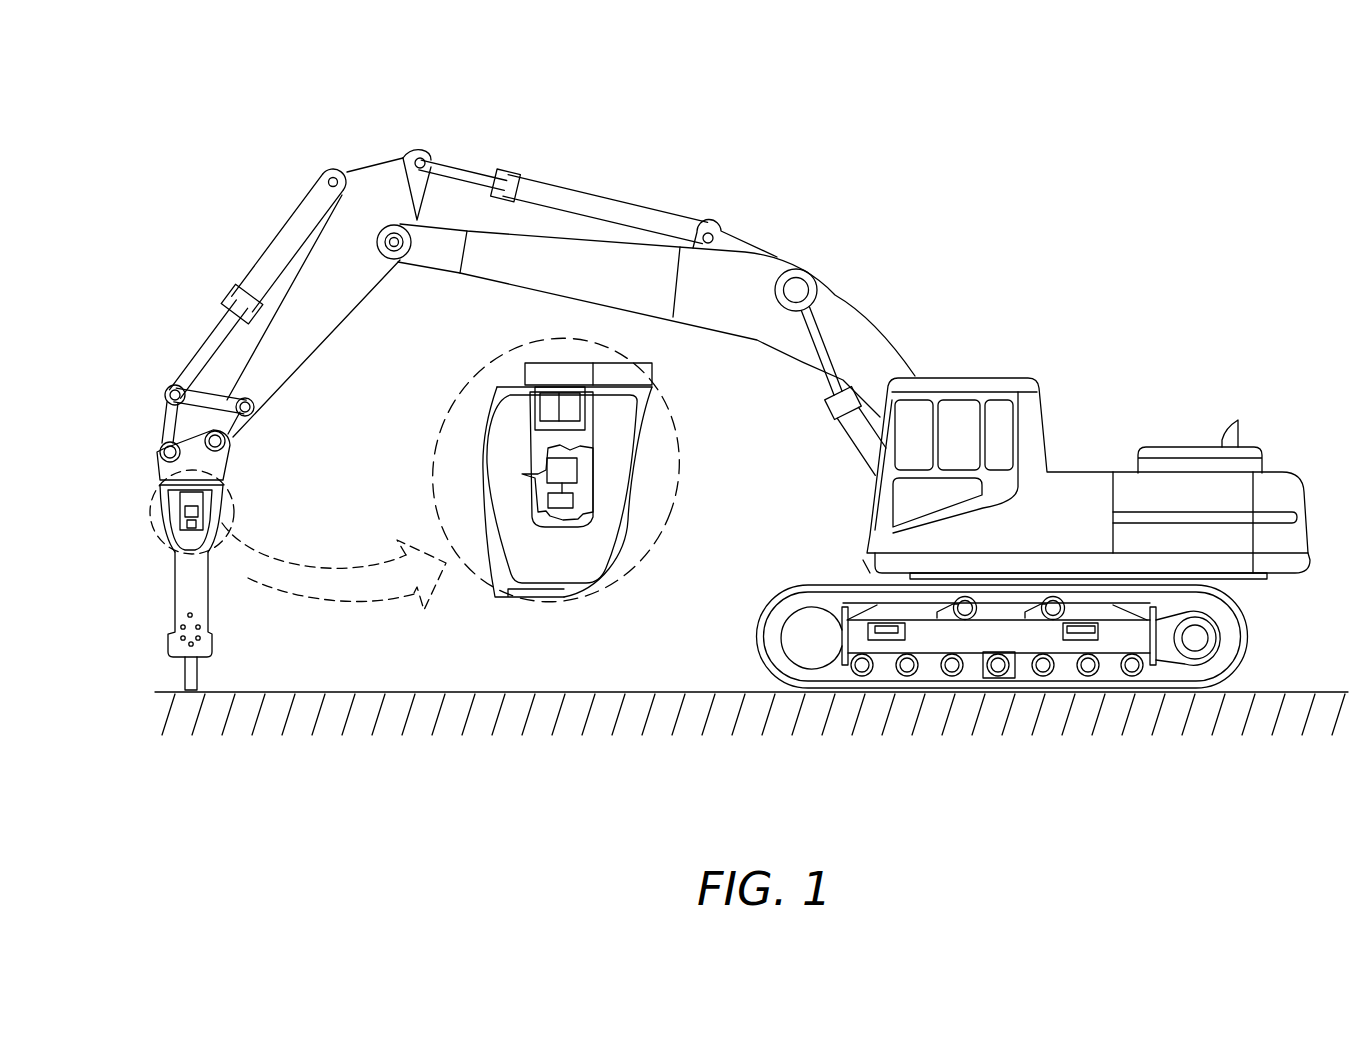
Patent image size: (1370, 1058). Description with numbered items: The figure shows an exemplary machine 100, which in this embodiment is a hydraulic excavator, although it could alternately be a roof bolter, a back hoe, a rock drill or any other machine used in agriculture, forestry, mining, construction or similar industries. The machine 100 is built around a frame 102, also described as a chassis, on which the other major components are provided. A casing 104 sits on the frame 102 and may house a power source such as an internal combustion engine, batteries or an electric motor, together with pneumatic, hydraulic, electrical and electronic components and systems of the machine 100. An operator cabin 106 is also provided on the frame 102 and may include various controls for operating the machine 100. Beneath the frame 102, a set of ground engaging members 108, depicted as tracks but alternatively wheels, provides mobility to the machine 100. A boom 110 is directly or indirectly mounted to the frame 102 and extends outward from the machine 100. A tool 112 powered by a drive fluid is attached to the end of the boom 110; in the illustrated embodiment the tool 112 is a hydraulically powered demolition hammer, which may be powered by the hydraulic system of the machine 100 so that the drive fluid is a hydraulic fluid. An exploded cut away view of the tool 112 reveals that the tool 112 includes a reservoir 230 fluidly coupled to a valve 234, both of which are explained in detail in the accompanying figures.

The machine 100 is at (1085, 210).
The frame 102 is at (867, 563).
The casing 104 is at (1080, 472).
The operator cabin 106 is at (972, 378).
The ground engaging members 108 is at (1247, 637).
The boom 110 is at (601, 273).
The tool 112 is at (131, 471).
The reservoir 230 is at (548, 468).
The valve 234 is at (562, 508).